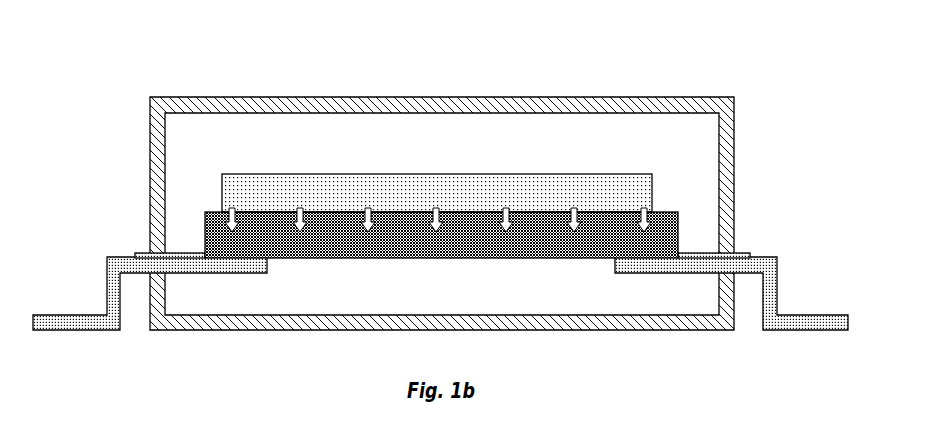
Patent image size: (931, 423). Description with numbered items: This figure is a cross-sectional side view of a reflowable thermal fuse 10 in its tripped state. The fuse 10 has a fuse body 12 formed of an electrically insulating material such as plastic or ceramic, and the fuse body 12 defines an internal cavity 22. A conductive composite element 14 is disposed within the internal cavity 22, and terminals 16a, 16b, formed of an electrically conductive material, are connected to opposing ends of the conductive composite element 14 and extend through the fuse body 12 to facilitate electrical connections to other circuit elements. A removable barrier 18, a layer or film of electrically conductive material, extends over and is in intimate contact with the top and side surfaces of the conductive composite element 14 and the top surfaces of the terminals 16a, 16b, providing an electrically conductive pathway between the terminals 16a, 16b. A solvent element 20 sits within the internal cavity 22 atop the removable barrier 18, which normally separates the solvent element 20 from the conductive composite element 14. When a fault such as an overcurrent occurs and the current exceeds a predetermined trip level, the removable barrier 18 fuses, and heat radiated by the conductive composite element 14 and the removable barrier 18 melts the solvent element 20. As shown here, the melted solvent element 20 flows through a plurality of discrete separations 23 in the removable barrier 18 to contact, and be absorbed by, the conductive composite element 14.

The fuse 10 is at (105, 85).
The fuse body 12 is at (205, 103).
The conductive composite element 14 is at (322, 248).
The terminal 16a is at (112, 257).
The terminal 16b is at (777, 257).
The removable barrier 18 is at (547, 212).
The solvent element 20 is at (332, 180).
The internal cavity 22 is at (692, 148).
The separations 23 is at (440, 232).